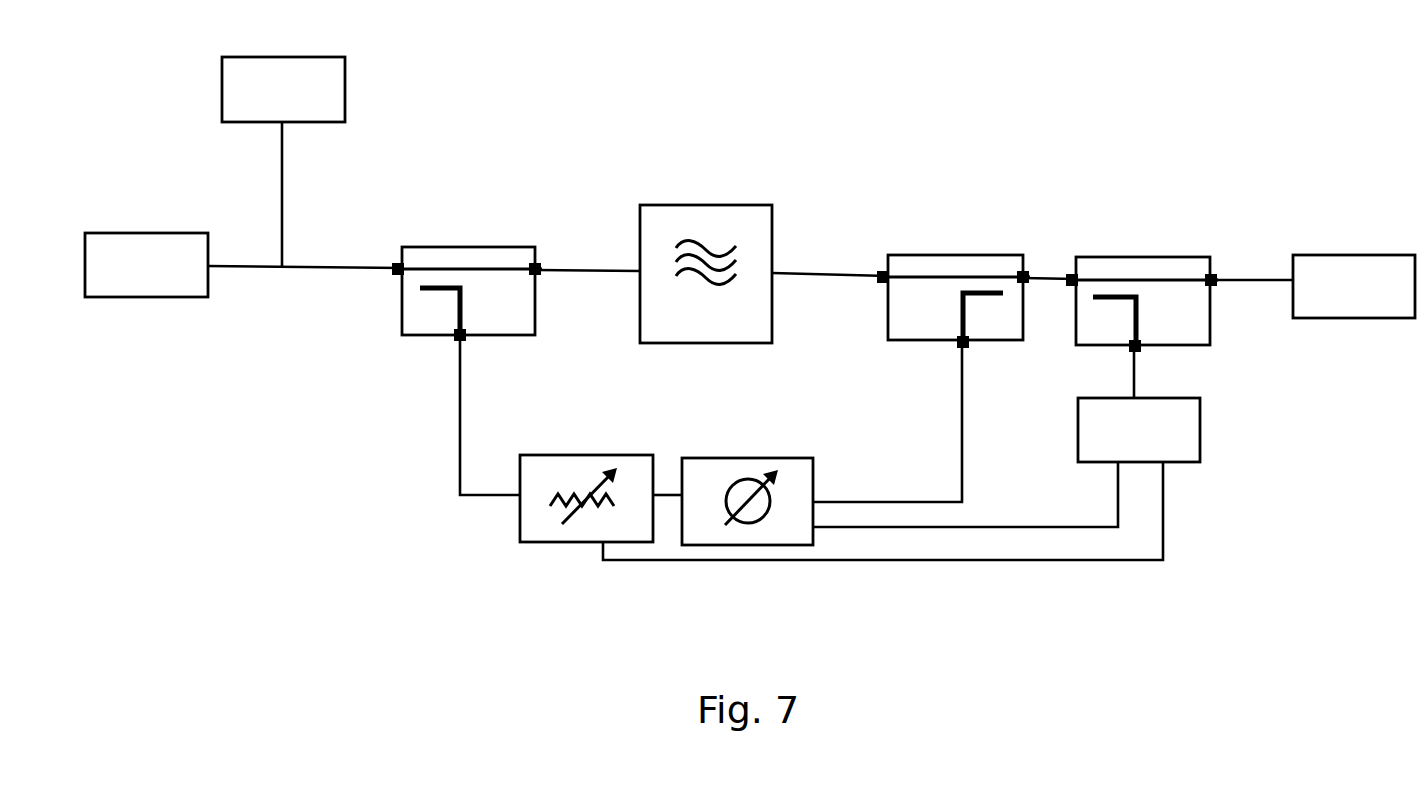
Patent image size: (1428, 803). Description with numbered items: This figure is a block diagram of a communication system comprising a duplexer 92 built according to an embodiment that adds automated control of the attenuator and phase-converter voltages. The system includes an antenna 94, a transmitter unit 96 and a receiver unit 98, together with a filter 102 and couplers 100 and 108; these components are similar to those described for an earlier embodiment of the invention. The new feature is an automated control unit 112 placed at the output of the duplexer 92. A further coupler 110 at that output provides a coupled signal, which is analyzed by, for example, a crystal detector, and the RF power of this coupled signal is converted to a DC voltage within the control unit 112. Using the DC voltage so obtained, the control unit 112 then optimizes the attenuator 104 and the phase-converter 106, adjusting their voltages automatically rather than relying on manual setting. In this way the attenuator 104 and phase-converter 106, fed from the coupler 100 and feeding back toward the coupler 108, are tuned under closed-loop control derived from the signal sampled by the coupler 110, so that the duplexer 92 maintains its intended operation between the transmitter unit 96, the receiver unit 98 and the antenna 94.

The duplexer 92 is at (868, 211).
The antenna 94 is at (346, 111).
The transmitter unit 96 is at (171, 298).
The receiver unit 98 is at (1387, 318).
The coupler 100 is at (402, 321).
The filter 102 is at (686, 344).
The attenuator 104 is at (546, 455).
The phase-converter 106 is at (710, 458).
The coupler 108 is at (888, 341).
The coupler 110 is at (1210, 316).
The automated control unit 112 is at (1078, 446).